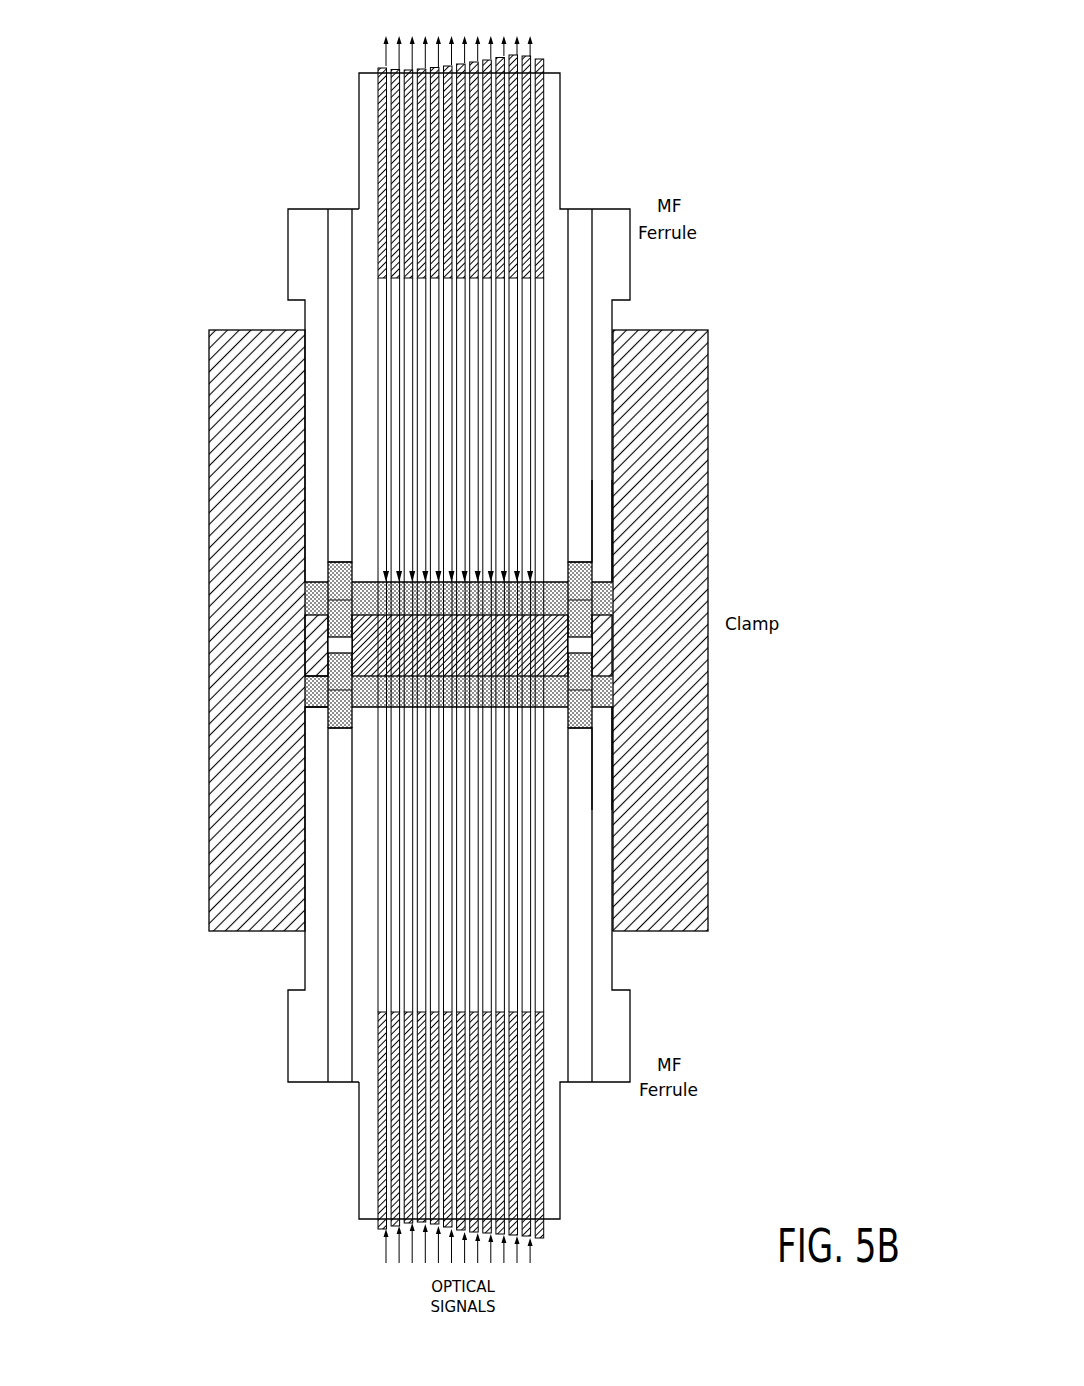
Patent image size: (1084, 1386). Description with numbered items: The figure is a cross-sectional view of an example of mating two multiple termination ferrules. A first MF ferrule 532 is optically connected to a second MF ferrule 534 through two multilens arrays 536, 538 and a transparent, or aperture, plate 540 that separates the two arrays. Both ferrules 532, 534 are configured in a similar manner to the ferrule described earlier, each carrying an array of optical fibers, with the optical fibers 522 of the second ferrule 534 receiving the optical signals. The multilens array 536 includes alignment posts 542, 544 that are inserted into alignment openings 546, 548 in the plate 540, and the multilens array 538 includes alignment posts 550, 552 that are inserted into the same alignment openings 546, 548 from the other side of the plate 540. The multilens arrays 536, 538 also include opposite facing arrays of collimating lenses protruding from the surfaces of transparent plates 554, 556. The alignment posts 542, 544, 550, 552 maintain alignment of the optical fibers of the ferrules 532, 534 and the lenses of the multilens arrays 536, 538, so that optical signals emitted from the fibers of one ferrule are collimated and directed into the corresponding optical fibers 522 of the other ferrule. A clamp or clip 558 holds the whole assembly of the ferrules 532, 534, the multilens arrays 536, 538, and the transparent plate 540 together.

The optical fibers 522 is at (382, 64).
The first MF ferrule 532 is at (689, 991).
The second MF ferrule 534 is at (682, 187).
The multilens array 536 is at (598, 554).
The multilens array 538 is at (600, 716).
The transparent or aperture plate 540 is at (617, 632).
The alignment post 542 is at (343, 630).
The alignment post 544 is at (580, 617).
The alignment opening 546 is at (343, 645).
The alignment opening 548 is at (580, 667).
The alignment post 550 is at (320, 688).
The alignment post 552 is at (593, 650).
The transparent plate 554 is at (330, 658).
The transparent plate 556 is at (350, 635).
The clamp or clip 558 is at (708, 675).